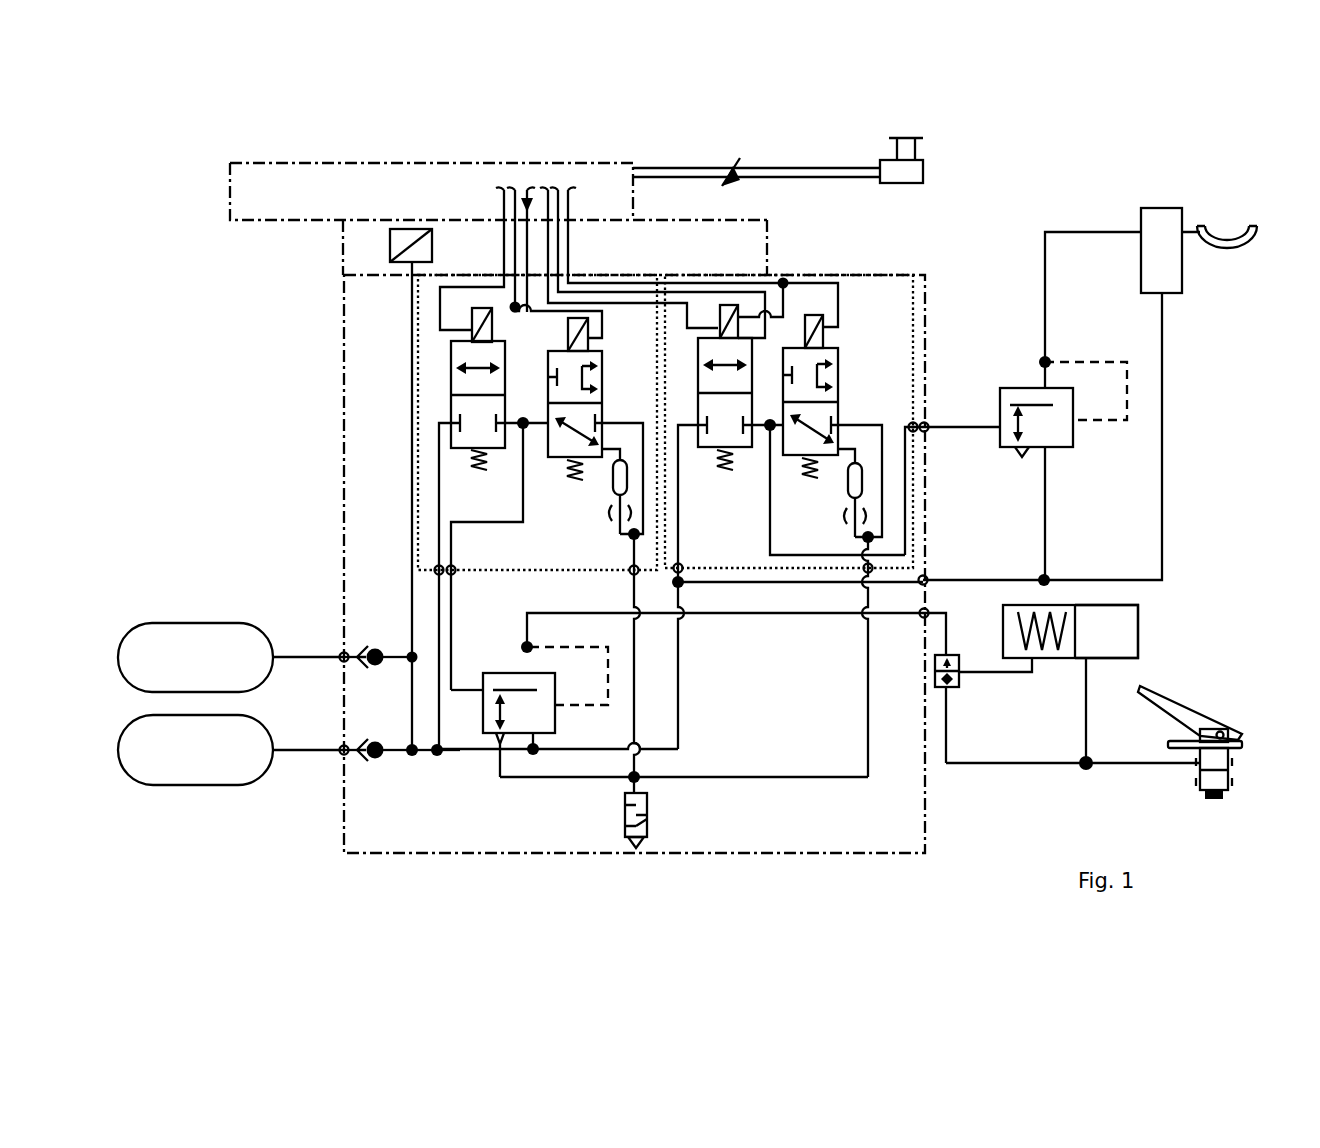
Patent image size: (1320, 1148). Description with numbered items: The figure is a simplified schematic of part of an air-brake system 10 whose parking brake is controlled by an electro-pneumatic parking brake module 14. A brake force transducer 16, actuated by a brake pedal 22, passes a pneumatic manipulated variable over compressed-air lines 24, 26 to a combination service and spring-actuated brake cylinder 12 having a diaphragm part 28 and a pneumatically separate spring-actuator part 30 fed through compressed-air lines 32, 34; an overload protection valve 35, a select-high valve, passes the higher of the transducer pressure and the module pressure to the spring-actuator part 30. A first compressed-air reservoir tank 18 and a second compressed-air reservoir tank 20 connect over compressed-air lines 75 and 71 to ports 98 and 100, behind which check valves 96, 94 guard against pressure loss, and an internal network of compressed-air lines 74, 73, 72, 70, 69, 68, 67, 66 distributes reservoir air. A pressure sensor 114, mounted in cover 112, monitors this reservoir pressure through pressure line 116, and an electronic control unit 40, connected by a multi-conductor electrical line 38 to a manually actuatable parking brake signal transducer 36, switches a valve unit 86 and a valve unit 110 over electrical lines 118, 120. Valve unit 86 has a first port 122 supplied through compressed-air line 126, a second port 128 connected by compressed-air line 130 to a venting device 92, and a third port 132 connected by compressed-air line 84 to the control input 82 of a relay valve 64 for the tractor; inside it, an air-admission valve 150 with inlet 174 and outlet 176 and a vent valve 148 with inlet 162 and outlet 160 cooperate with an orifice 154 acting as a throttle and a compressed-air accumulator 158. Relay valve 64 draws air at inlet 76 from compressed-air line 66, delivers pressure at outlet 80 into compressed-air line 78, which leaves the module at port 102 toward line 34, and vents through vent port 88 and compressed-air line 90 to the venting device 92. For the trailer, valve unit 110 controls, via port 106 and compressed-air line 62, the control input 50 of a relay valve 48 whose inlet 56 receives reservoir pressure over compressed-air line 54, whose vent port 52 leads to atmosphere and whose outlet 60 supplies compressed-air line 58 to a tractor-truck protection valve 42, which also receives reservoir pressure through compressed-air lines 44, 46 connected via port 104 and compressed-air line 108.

The air-brake system 10 is at (1022, 158).
The combination service and spring-actuated brake cylinder 12 is at (1146, 600).
The parking brake module 14 is at (935, 800).
The brake force transducer 16 is at (1236, 736).
The first compressed-air reservoir tank 18 is at (262, 636).
The second compressed-air reservoir tank 20 is at (244, 776).
The brake pedal 22 is at (1178, 704).
The compressed-air line 24 is at (1094, 766).
The compressed-air line 26 is at (1088, 722).
The diaphragm part 28 is at (1133, 634).
The spring-actuator part 30 is at (1020, 604).
The compressed-air line 32 is at (986, 674).
The compressed-air line 34 is at (950, 654).
The overload protection valve 35 is at (955, 690).
The parking brake signal transducer 36 is at (924, 170).
The multi-conductor electrical line 38 is at (750, 170).
The electronic control unit 40 is at (556, 160).
The tractor-truck protection valve 42 is at (1208, 188).
The compressed-air line 44 is at (992, 578).
The compressed-air line 46 is at (1163, 464).
The relay valve 48 is at (1040, 366).
The control input 50 is at (1000, 420).
The vent port 52 is at (1019, 456).
The compressed-air line 54 is at (1046, 512).
The inlet 56 is at (1048, 450).
The compressed-air line 58 is at (1046, 306).
The outlet 60 is at (1066, 388).
The compressed-air line 62 is at (942, 430).
The relay valve 64 is at (510, 670).
The compressed-air line 66 is at (540, 750).
The compressed-air line 67 is at (443, 758).
The compressed-air line 68 is at (434, 758).
The compressed-air line 69 is at (409, 758).
The compressed-air line 70 is at (350, 756).
The compressed-air line 71 is at (298, 752).
The pressure line 72 is at (410, 728).
The compressed-air line 73 is at (396, 662).
The compressed-air line 74 is at (348, 664).
The compressed-air line 75 is at (292, 658).
The inlet 76 is at (545, 740).
The compressed-air line 78 is at (552, 616).
The outlet 80 is at (540, 666).
The control input 82 is at (484, 686).
The compressed-air line 84 is at (456, 624).
The valve unit 86 is at (530, 574).
The vent port 88 is at (498, 750).
The compressed-air line 90 is at (530, 778).
The venting device 92 is at (640, 816).
The check valve 94 is at (375, 740).
The check valve 96 is at (377, 648).
The port 98 is at (348, 652).
The port 100 is at (341, 745).
The port 102 is at (934, 612).
The port 104 is at (930, 576).
The port 106 is at (928, 422).
The compressed-air line 108 is at (690, 586).
The valve unit 110 is at (684, 568).
The cover 112 is at (766, 244).
The pressure sensor 114 is at (434, 250).
The pressure line 116 is at (410, 492).
The electrical lines 118 is at (521, 252).
The electrical lines 120 is at (689, 252).
The first port 122 is at (436, 574).
The compressed-air line 126 is at (446, 500).
The second port 128 is at (630, 568).
The compressed-air line 130 is at (637, 682).
The third port 132 is at (456, 562).
The vent valve 148 is at (590, 342).
The air-admission valve 150 is at (494, 334).
The orifice 154 is at (608, 512).
The compressed-air accumulator 158 is at (610, 484).
The outlet 160 is at (604, 420).
The inlet 162 is at (550, 442).
The inlet 174 is at (447, 420).
The outlet 176 is at (521, 417).